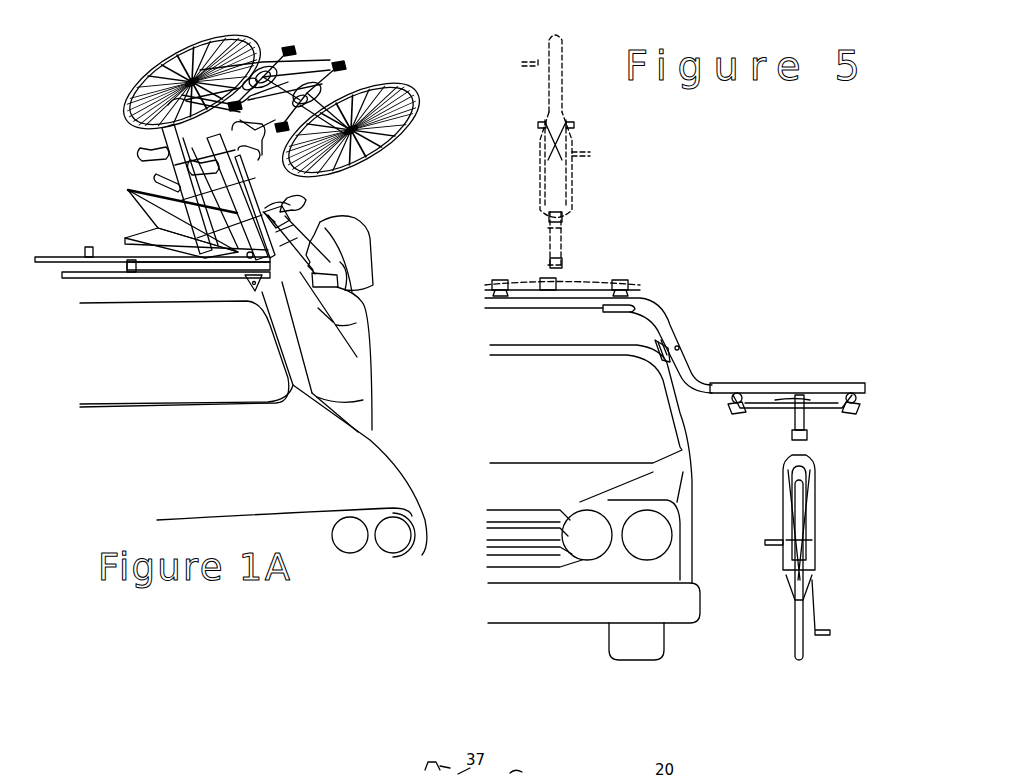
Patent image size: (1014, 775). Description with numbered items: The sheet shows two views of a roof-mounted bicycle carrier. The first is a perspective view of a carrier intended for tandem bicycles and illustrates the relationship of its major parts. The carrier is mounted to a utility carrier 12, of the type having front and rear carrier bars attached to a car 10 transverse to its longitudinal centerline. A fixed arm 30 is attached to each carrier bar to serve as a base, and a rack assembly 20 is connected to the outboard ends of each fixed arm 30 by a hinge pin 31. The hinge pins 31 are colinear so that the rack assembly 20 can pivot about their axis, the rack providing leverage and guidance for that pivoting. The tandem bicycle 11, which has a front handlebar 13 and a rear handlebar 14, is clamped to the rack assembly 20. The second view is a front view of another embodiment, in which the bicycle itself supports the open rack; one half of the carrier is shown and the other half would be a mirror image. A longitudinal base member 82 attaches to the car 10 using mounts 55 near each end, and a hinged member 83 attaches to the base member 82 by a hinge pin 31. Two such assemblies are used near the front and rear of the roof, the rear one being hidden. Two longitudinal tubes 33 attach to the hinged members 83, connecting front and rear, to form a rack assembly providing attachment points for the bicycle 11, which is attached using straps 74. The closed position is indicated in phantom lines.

In FIG. 1A, the car 10 is at (382, 455).
In FIG. 5, the car 10 is at (695, 503).
In FIG. 1A, the tandem bicycle 11 is at (125, 91).
In FIG. 5, the tandem bicycle 11 is at (814, 488).
In FIG. 1A, the utility carrier 12 is at (48, 264).
In FIG. 1A, the front handlebar 13 is at (296, 205).
In FIG. 1A, the rear handlebar 14 is at (210, 110).
In FIG. 1A, the rack assembly 20 is at (158, 144).
In FIG. 1A, the fixed arm 30 is at (90, 253).
In FIG. 1A, the hinge pin 31 is at (264, 278).
In FIG. 5, the hinge pin 31 is at (679, 347).
In FIG. 5, the longitudinal tube 33 is at (731, 398).
In FIG. 5, the mount 55 is at (644, 324).
In FIG. 5, the strap 74 is at (738, 414).
In FIG. 5, the longitudinal base member 82 is at (652, 310).
In FIG. 5, the hinged member 83 is at (843, 386).